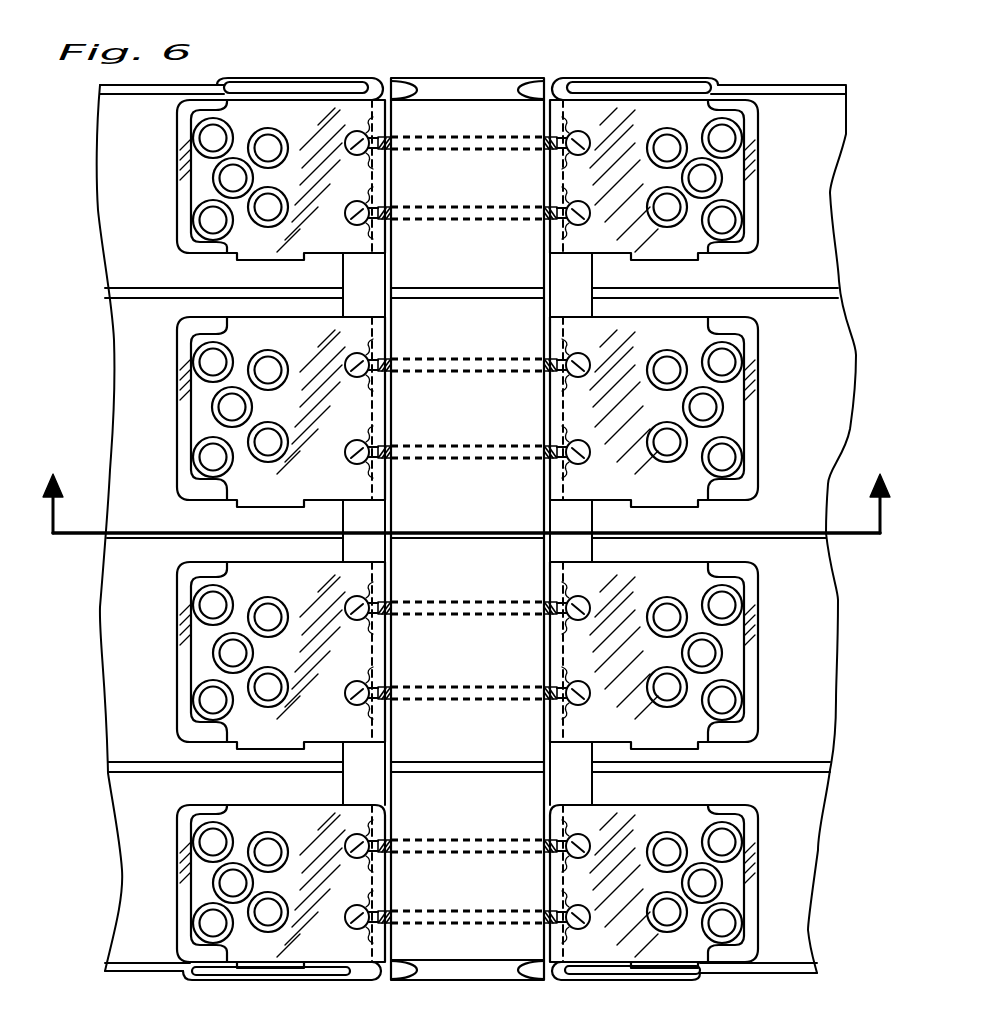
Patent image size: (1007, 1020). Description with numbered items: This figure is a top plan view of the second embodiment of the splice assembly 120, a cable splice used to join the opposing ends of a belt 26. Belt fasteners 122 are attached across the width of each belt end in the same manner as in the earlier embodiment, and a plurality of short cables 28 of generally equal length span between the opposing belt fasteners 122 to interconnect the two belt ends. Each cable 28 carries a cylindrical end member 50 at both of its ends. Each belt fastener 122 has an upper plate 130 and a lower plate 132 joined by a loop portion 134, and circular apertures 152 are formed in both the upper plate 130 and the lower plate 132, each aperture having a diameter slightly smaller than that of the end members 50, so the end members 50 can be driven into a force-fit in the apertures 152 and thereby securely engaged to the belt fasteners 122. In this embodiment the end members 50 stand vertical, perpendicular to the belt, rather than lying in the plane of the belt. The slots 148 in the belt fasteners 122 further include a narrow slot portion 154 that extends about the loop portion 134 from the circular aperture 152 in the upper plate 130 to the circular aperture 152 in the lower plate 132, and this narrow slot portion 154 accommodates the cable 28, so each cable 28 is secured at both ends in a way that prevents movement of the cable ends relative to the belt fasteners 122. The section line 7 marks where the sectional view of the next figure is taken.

The section line 7- 7 is at (466, 490).
The belt 26 is at (120, 195).
The short cables 28 is at (455, 150).
The end members 50 is at (374, 150).
The splice assembly 120 is at (568, 72).
The belt fasteners 122 is at (258, 110).
The upper plate 130 is at (247, 243).
The lower plate 132 is at (305, 78).
The loop portion 134 is at (388, 250).
The slots 148 is at (350, 123).
The circular apertures 152 is at (478, 108).
The narrow slot portion 154 is at (380, 135).